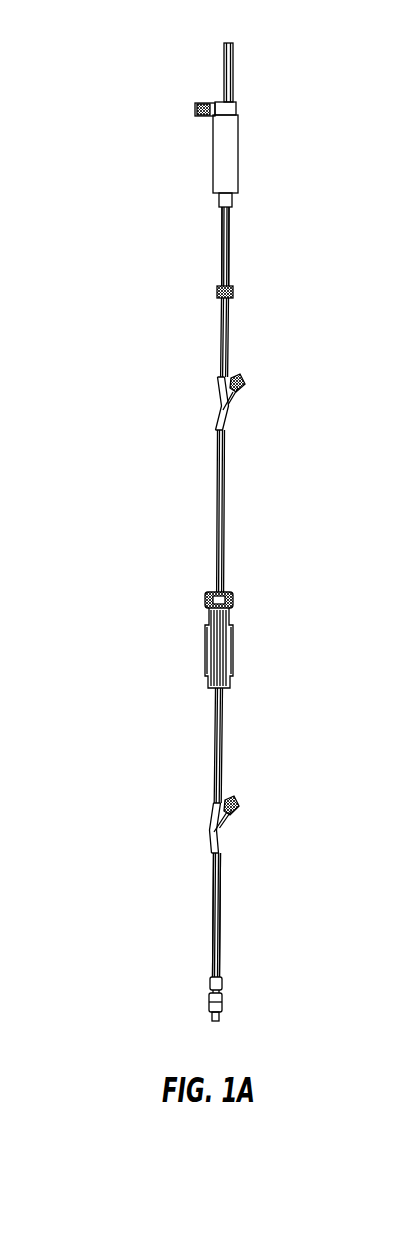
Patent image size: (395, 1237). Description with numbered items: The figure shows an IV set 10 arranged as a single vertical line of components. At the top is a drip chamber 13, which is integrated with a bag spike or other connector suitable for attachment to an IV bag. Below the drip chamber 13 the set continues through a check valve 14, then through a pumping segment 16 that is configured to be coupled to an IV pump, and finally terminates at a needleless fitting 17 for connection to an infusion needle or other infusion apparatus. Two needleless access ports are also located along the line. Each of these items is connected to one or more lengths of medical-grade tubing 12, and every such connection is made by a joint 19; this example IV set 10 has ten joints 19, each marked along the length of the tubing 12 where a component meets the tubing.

The IV set 10 is at (144, 54).
The medical-grade tubing 12 is at (226, 512).
The drip chamber 13 is at (227, 150).
The check valve 14 is at (233, 290).
The pumping segment 16 is at (234, 650).
The needleless fitting 17 is at (223, 1003).
The joint 19 is at (196, 209).